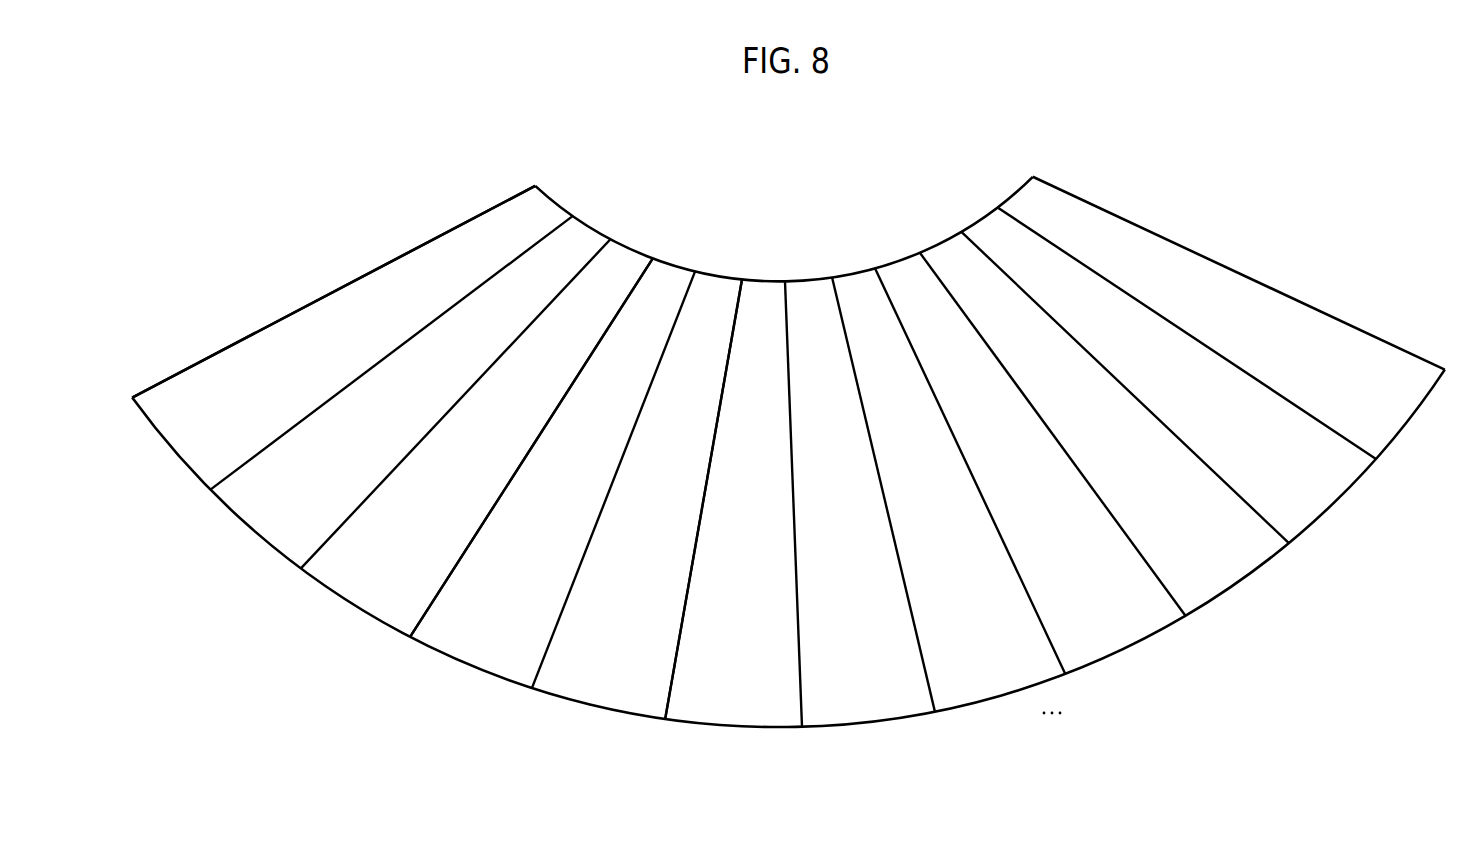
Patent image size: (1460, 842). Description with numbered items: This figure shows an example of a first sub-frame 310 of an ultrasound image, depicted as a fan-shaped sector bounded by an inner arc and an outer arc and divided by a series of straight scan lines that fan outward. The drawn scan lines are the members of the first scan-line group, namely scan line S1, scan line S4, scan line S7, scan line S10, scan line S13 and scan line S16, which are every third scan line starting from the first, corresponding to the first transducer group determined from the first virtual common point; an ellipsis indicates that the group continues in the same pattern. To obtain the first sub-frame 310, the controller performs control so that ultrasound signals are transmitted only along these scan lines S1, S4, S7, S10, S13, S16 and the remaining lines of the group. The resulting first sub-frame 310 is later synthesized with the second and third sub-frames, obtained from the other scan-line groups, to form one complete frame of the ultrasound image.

The first sub-frame 310 is at (1234, 259).
The scan line S1 is at (149, 392).
The scan line S4 is at (238, 473).
The scan line S7 is at (325, 548).
The scan line S10 is at (433, 607).
The scan line S13 is at (550, 660).
The scan line S16 is at (675, 695).